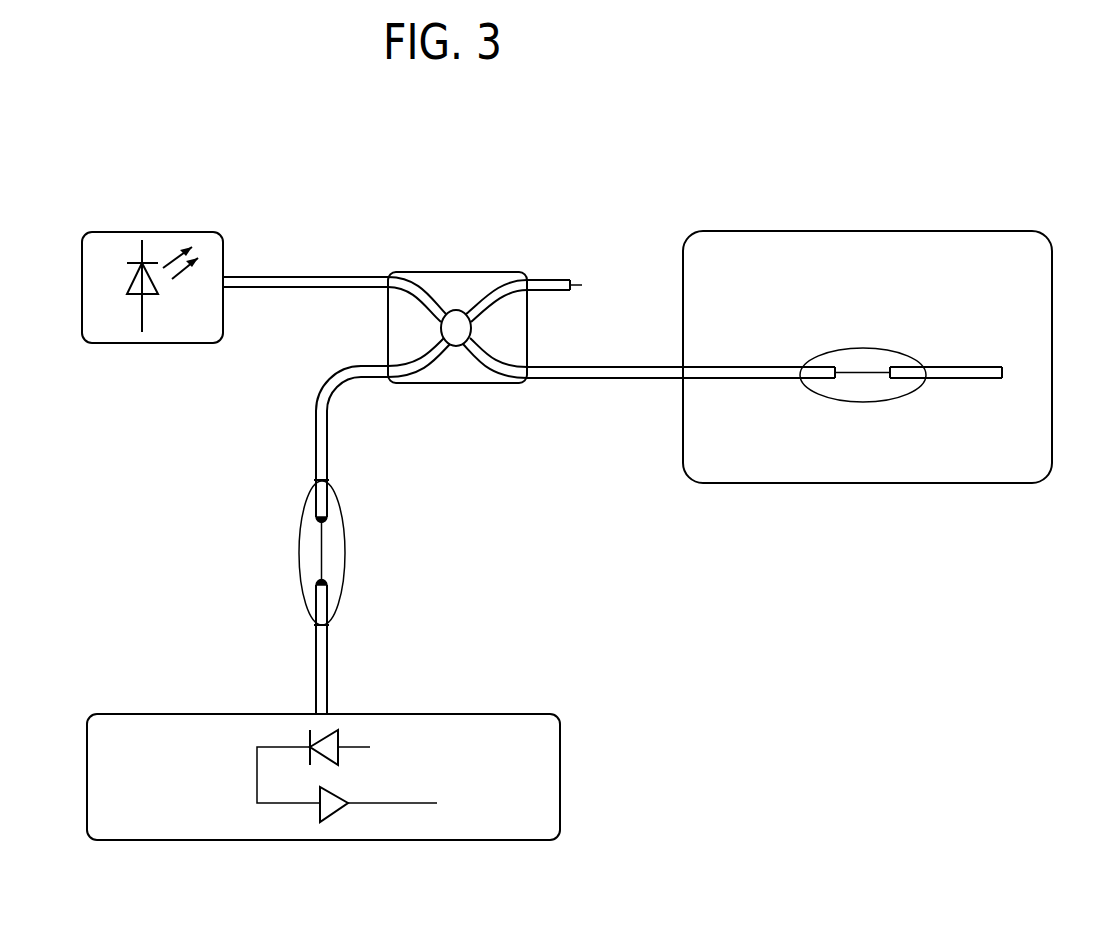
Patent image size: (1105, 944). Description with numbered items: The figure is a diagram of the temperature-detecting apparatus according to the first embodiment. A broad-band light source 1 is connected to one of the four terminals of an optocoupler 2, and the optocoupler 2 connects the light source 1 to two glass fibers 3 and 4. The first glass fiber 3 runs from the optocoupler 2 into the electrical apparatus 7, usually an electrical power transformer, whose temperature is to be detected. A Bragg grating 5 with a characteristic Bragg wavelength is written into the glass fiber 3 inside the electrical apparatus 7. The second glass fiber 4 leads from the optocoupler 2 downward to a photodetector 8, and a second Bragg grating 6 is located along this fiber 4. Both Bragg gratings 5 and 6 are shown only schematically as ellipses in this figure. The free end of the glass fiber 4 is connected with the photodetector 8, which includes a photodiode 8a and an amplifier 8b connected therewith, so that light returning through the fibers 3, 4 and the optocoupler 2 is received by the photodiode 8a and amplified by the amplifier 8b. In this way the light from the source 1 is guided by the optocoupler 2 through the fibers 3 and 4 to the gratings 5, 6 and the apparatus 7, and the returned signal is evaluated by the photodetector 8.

The broad-band light source 1 is at (102, 250).
The optocoupler 2 is at (462, 280).
The first glass fiber 3 is at (620, 372).
The glass fiber 4 is at (325, 395).
The Bragg grating 5 is at (868, 392).
The Bragg grating 6 is at (308, 550).
The electrical apparatus 7 is at (1005, 267).
The photodetector 8 is at (323, 776).
The photodiode 8a is at (342, 737).
The amplifier 8b is at (325, 820).